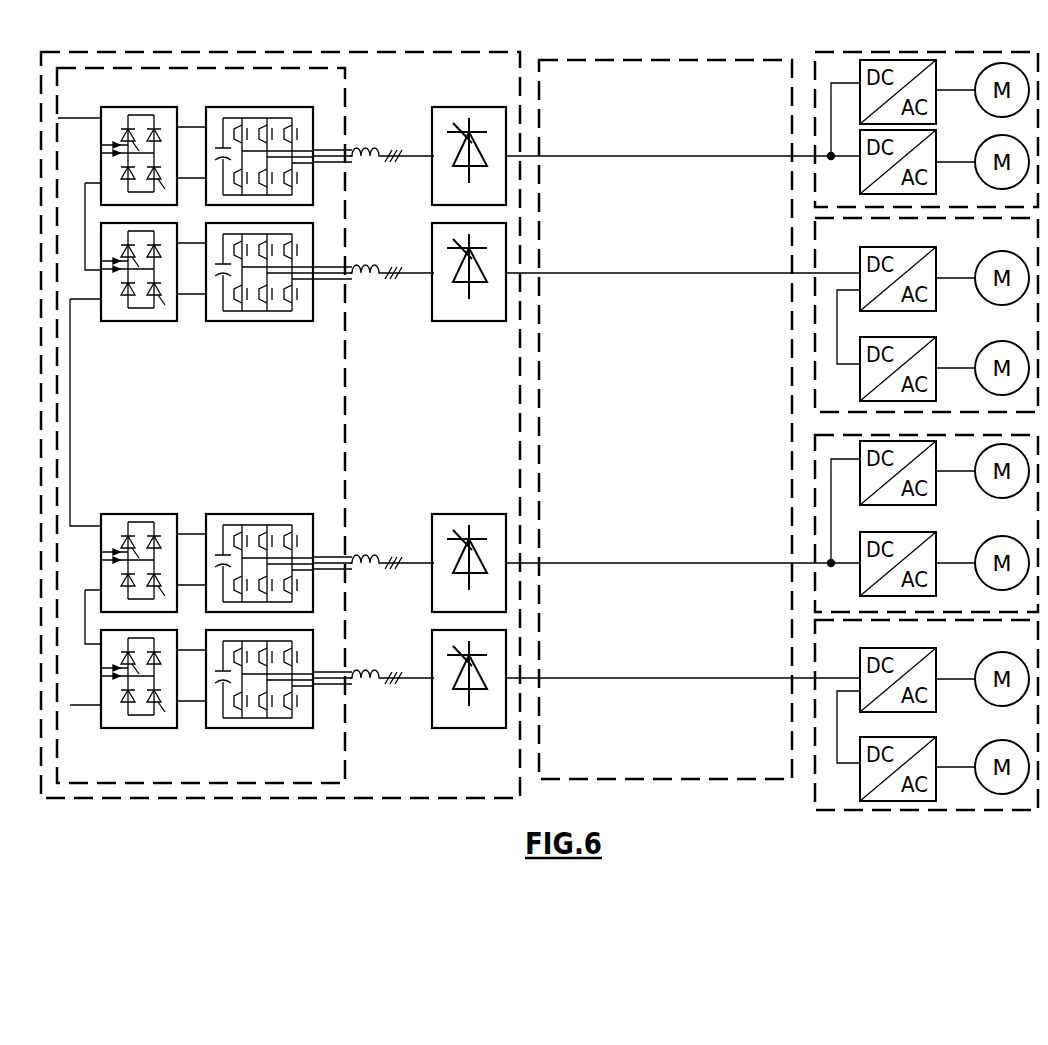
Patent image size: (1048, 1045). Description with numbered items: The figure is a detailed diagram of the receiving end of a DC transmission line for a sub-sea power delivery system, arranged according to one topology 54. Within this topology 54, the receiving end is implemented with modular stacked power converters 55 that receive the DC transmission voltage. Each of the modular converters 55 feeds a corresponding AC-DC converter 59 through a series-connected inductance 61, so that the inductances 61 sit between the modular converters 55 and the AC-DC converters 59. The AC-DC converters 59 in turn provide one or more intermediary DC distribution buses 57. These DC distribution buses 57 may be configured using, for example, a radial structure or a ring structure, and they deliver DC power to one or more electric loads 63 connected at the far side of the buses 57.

The topology 54 is at (166, 26).
The modular stacked power converters 55 is at (259, 79).
The intermediary DC distribution buses 57 is at (674, 60).
The AC-DC converters 59 is at (456, 107).
The series-connected inductances 61 is at (360, 263).
The electric loads 63 is at (912, 52).